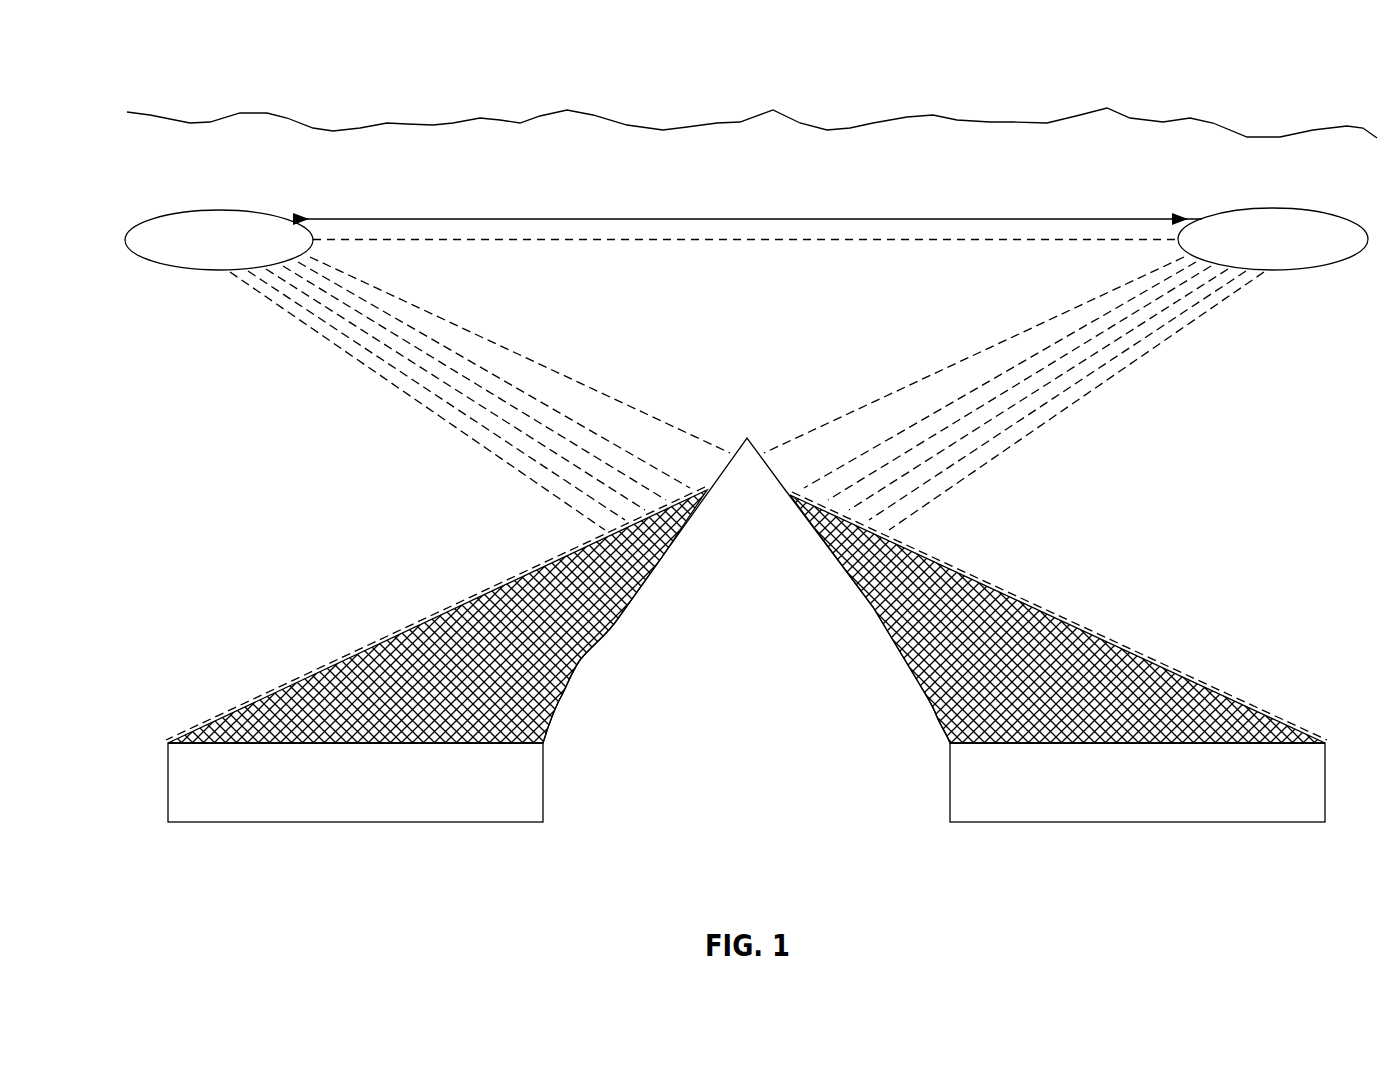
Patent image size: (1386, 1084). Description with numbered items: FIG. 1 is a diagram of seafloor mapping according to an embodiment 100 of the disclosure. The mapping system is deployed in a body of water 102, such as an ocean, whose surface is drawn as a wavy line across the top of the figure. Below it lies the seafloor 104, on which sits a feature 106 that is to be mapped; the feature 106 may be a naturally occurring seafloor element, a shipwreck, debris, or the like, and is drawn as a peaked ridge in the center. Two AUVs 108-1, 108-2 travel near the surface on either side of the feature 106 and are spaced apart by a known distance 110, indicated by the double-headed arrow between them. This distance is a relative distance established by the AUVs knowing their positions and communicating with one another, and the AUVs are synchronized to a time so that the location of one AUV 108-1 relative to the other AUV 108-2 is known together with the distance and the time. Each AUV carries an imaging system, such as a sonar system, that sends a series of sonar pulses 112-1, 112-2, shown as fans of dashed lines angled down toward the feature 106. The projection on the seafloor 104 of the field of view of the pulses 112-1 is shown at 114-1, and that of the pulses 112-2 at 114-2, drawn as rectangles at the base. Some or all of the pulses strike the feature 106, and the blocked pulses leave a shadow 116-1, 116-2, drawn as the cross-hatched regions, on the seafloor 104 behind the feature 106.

The mapping embodiment 100 is at (1276, 74).
The body of water 102 is at (961, 136).
The seafloor 104 is at (1195, 735).
The feature 106 is at (706, 647).
The AUV 108-1 is at (221, 209).
The AUV 108-2 is at (1272, 207).
The known distance 110 is at (777, 217).
The sonar pulses 112-1 is at (378, 367).
The sonar pulses 112-2 is at (1115, 367).
The projection of sonar field of view 114-1 is at (1138, 822).
The projection of sonar field of view 114-2 is at (355, 822).
The shadow 116-1 is at (1026, 653).
The shadow 116-2 is at (446, 653).